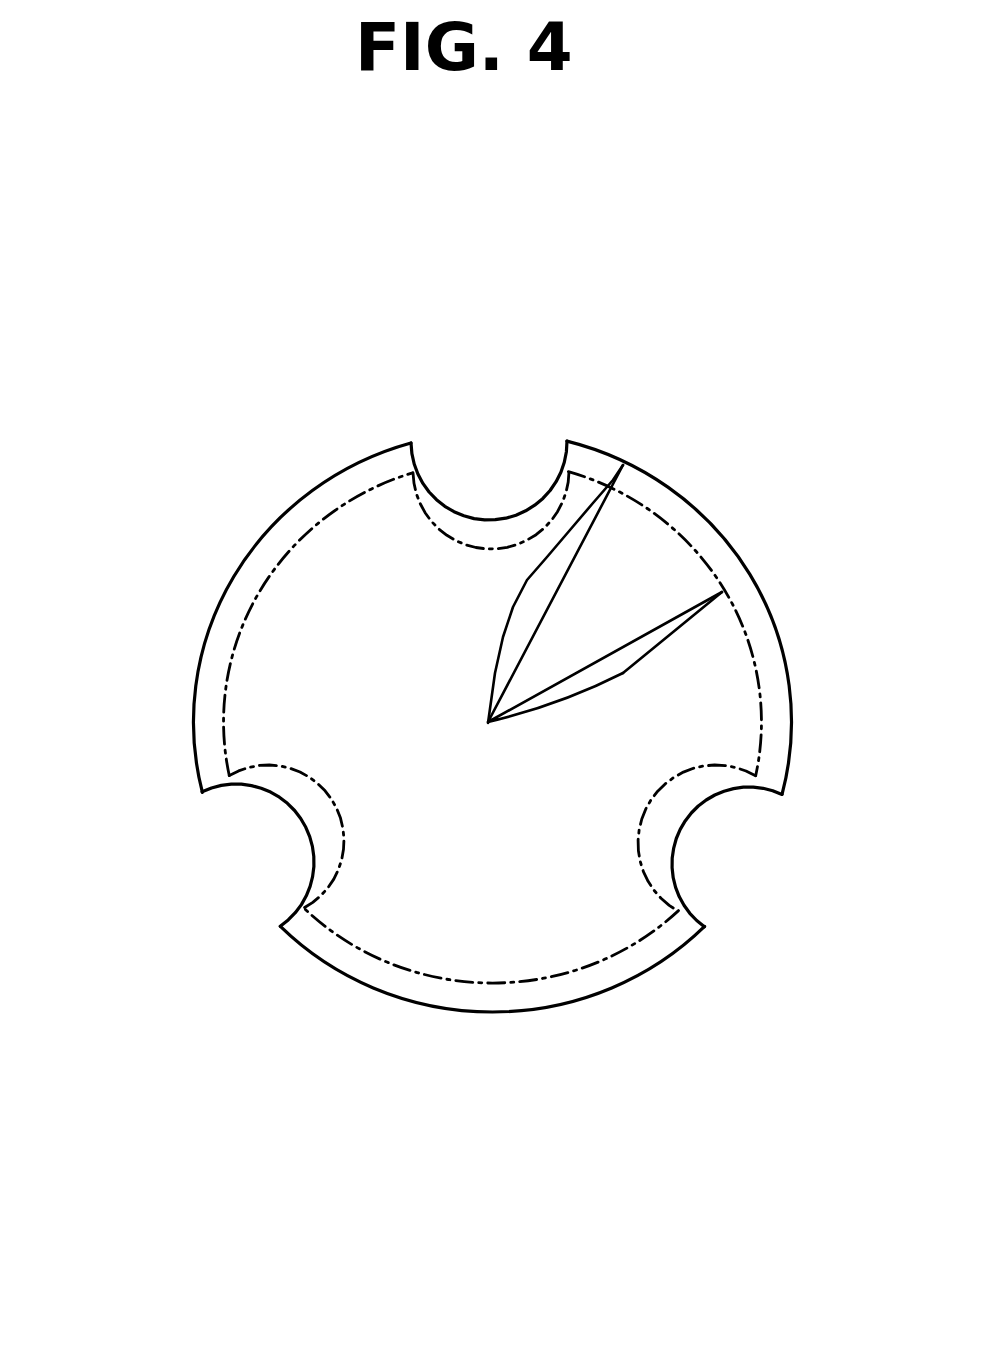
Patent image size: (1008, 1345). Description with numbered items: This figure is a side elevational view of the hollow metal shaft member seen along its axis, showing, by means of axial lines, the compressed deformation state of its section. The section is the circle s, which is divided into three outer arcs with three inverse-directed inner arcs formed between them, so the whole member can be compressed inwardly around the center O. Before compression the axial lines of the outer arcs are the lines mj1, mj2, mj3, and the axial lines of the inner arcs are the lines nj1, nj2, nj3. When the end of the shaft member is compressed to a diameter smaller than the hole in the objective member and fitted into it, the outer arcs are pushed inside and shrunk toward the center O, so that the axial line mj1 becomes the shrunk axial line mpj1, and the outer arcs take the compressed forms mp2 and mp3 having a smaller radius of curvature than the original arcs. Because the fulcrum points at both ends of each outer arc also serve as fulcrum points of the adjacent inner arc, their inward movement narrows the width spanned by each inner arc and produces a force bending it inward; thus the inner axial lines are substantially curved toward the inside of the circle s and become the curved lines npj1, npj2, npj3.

The sectional circle s is at (483, 743).
The axial line of first outer arc mj1 is at (710, 525).
The axial line of second outer arc mj2 is at (518, 1012).
The axial line of third outer arc mj3 is at (248, 553).
The axial line of first inner arc nj1 is at (502, 516).
The axial line of second inner arc nj2 is at (675, 838).
The axial line of third inner arc nj3 is at (222, 857).
The shrunk axial line of first outer arc mpj1 is at (737, 618).
The compressed second outer arc mp2 is at (465, 980).
The compressed third outer arc mp3 is at (280, 560).
The curved axial line of first inner arc npj1 is at (478, 548).
The curved axial line of second inner arc npj2 is at (633, 822).
The curved axial line of third inner arc npj3 is at (297, 773).
The center O is at (578, 593).